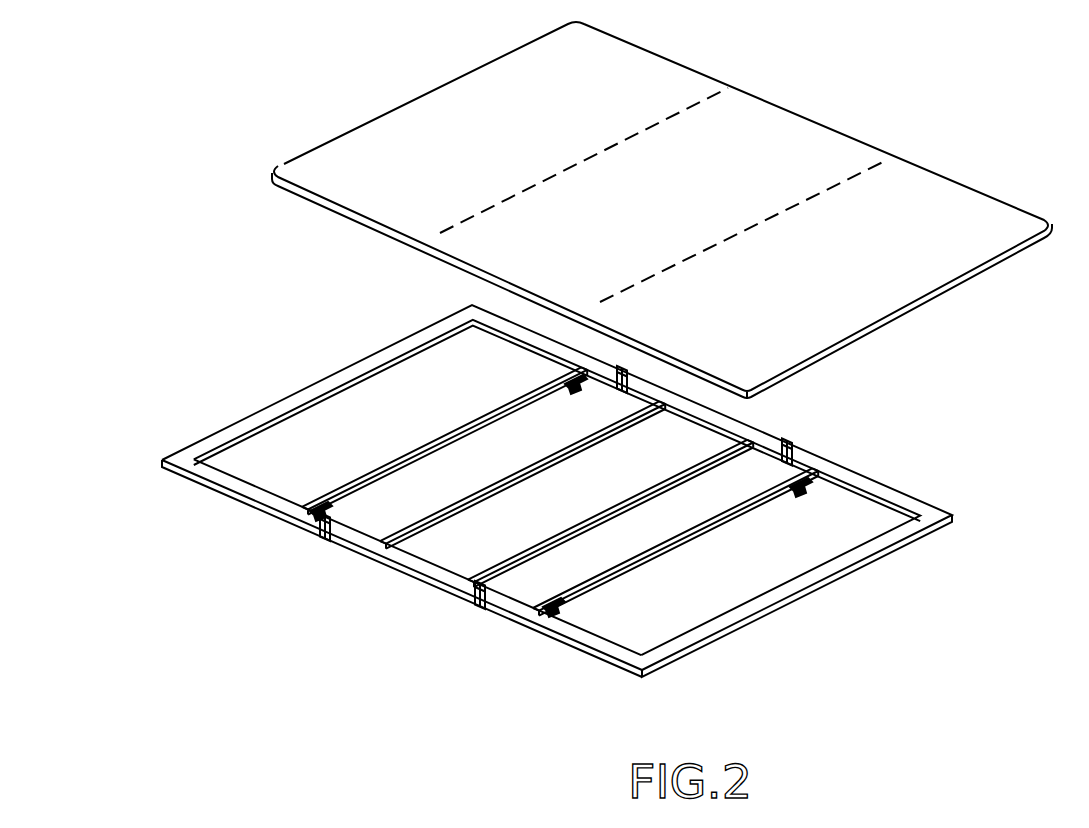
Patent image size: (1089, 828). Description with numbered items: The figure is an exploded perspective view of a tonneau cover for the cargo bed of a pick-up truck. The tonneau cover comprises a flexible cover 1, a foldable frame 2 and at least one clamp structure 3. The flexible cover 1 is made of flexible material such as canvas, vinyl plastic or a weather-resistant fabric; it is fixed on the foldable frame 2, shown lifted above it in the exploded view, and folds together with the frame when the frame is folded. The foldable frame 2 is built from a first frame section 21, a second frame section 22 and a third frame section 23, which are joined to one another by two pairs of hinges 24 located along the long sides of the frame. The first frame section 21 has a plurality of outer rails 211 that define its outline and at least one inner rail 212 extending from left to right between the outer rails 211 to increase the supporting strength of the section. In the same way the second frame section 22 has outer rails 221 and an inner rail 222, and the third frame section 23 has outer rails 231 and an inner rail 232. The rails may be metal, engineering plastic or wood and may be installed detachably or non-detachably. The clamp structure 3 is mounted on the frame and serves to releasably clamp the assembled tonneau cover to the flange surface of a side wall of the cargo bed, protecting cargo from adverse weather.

The flexible cover 1 is at (925, 185).
The foldable frame 2 is at (618, 493).
The first frame section 21 is at (392, 430).
The outer rails 211 is at (521, 331).
The inner rail 212 is at (516, 400).
The second frame section 22 is at (625, 514).
The outer rails 221 is at (727, 417).
The inner rail 222 is at (680, 462).
The third frame section 23 is at (769, 580).
The outer rails 231 is at (898, 497).
The inner rail 232 is at (703, 524).
The hinges 24 is at (320, 532).
The clamp structure 3 is at (823, 497).